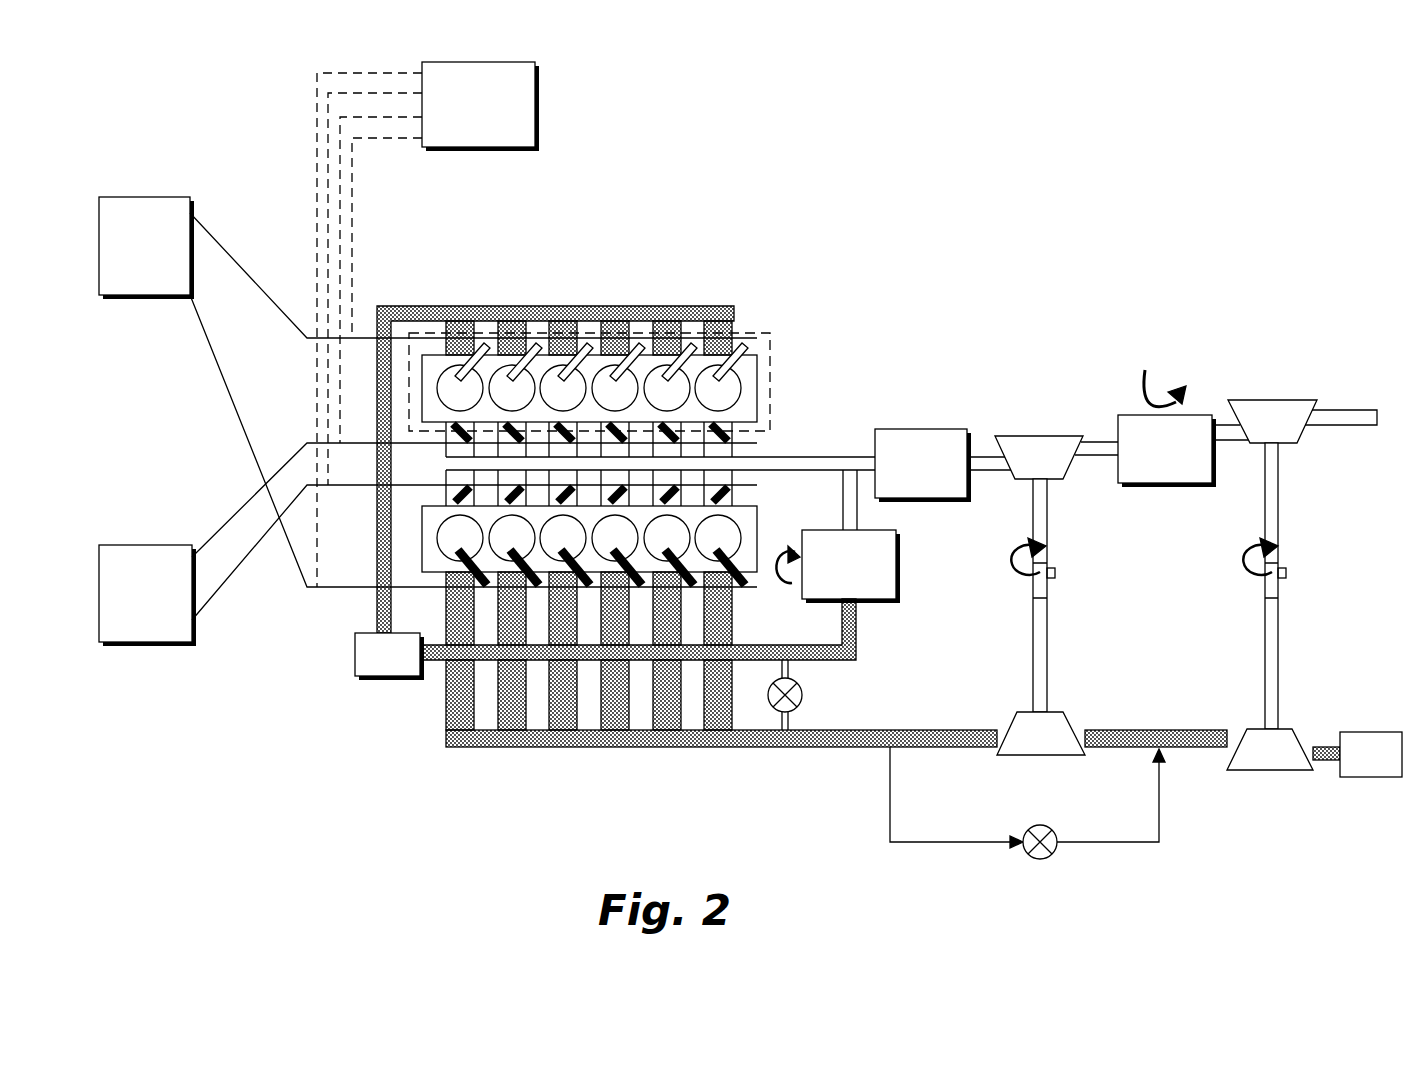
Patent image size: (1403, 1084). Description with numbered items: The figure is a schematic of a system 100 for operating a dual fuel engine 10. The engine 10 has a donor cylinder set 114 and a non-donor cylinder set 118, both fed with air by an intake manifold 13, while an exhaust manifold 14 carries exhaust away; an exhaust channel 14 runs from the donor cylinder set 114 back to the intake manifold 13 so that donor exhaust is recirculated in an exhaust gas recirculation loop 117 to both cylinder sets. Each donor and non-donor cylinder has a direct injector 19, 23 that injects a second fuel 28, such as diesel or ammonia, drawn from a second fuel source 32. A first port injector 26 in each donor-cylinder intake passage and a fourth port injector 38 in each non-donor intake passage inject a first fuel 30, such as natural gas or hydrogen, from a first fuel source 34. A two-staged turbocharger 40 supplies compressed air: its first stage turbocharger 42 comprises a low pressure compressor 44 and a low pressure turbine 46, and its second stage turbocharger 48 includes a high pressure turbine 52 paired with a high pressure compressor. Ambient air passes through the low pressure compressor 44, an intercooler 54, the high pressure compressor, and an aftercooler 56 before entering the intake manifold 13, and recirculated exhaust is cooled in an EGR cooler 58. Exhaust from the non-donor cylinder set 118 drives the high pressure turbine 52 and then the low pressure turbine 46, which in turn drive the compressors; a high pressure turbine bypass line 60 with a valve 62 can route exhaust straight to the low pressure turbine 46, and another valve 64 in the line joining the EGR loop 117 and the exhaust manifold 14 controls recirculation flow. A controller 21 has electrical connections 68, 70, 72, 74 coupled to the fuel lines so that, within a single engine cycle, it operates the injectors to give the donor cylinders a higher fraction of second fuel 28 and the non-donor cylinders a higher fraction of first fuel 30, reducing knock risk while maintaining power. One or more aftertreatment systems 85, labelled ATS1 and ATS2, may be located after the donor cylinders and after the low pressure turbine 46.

The engine 10 is at (628, 423).
The intake manifold 13 is at (835, 455).
The exhaust manifold 14 is at (496, 306).
The direct injector 19 is at (748, 352).
The controller 21 is at (538, 90).
The direct injector 23 is at (651, 484).
The first port injector 26 is at (742, 432).
The second fuel 28 is at (232, 262).
The first fuel 30 is at (250, 493).
The second fuel source 32 is at (170, 197).
The first fuel source 34 is at (166, 545).
The fourth port injector 38 is at (762, 488).
The two-staged turbocharger 40 is at (1319, 556).
The first stage turbocharger 42 is at (1317, 397).
The low pressure compressor 44 is at (1297, 445).
The low pressure turbine 46 is at (1247, 729).
The second stage turbocharger 48 is at (1083, 432).
The high pressure turbine 52 is at (1017, 712).
The intercooler 54 is at (1118, 415).
The aftercooler 56 is at (925, 429).
The EGR cooler 58 is at (898, 548).
The high pressure turbine bypass line 60 is at (890, 790).
The valve 62 is at (1037, 860).
The valve 64 is at (803, 694).
The electrical connection 68 is at (352, 215).
The electrical connection 70 is at (340, 190).
The electrical connection 72 is at (328, 168).
The electrical connection 74 is at (317, 140).
The aftertreatment system 85 is at (355, 654).
The system 100 is at (1223, 250).
The donor cylinder set 114 is at (776, 333).
The exhaust gas recirculation loop 117 is at (340, 690).
The non-donor cylinder set 118 is at (765, 512).